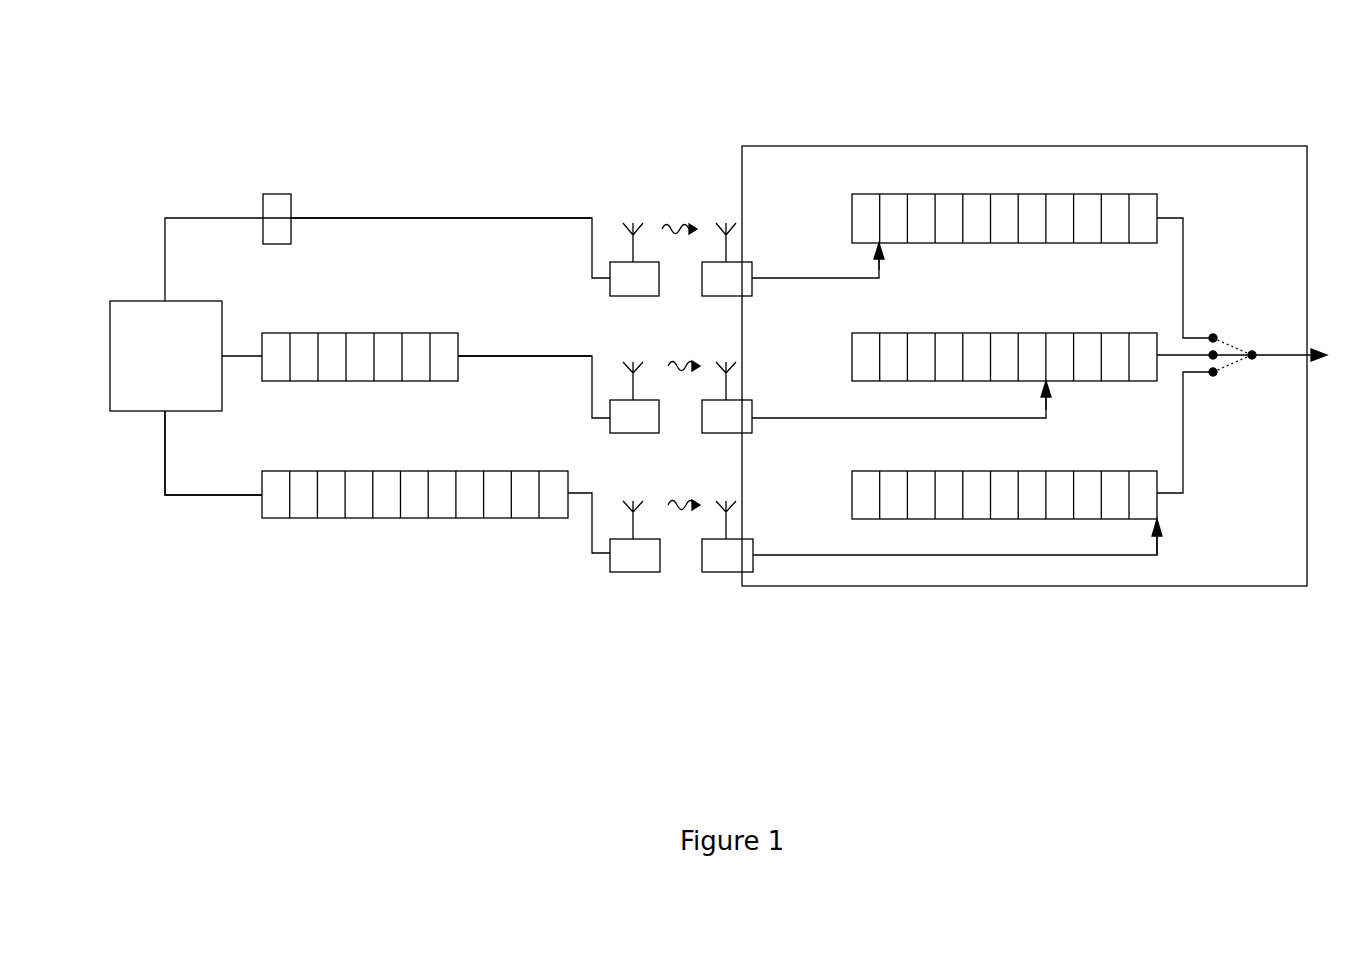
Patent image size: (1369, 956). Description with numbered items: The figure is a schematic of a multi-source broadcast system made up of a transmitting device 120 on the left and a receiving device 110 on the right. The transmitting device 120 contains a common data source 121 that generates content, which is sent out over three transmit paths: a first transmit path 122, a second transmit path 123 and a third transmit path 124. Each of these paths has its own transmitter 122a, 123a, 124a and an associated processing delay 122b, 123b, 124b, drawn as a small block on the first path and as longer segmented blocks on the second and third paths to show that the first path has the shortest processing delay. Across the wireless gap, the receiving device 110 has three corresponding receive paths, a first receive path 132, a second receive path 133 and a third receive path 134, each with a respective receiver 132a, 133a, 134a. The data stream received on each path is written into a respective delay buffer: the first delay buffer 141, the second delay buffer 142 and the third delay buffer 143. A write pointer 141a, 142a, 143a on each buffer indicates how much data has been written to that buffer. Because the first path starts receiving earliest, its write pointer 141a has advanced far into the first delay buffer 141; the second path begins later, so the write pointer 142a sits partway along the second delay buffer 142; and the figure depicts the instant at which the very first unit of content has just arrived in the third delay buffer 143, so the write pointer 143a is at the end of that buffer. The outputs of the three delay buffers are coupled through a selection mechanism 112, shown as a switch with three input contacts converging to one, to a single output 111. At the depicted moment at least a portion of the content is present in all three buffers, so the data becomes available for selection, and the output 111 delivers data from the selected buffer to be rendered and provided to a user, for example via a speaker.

The receiving device 110 is at (950, 145).
The output 111 is at (1313, 355).
The selection mechanism 112 is at (1234, 328).
The transmitting device 120 is at (381, 143).
The common data source 121 is at (166, 356).
The first transmit path 122 is at (424, 217).
The transmitter 122a is at (634, 259).
The processing delay 122b is at (275, 193).
The second transmit path 123 is at (491, 353).
The transmitter 123a is at (634, 397).
The processing delay 123b is at (330, 333).
The third transmit path 124 is at (212, 495).
The transmitter 124a is at (635, 536).
The processing delay 124b is at (386, 518).
The first receive path 132 is at (803, 277).
The receiver 132a is at (727, 259).
The second receive path 133 is at (806, 417).
The receiver 133a is at (727, 397).
The third receive path 134 is at (838, 554).
The receiver 134a is at (727, 536).
The first delay buffer 141 is at (1025, 194).
The write pointer 141a is at (882, 270).
The second delay buffer 142 is at (1040, 333).
The write pointer 142a is at (1047, 403).
The third delay buffer 143 is at (1029, 518).
The write pointer 143a is at (1157, 555).